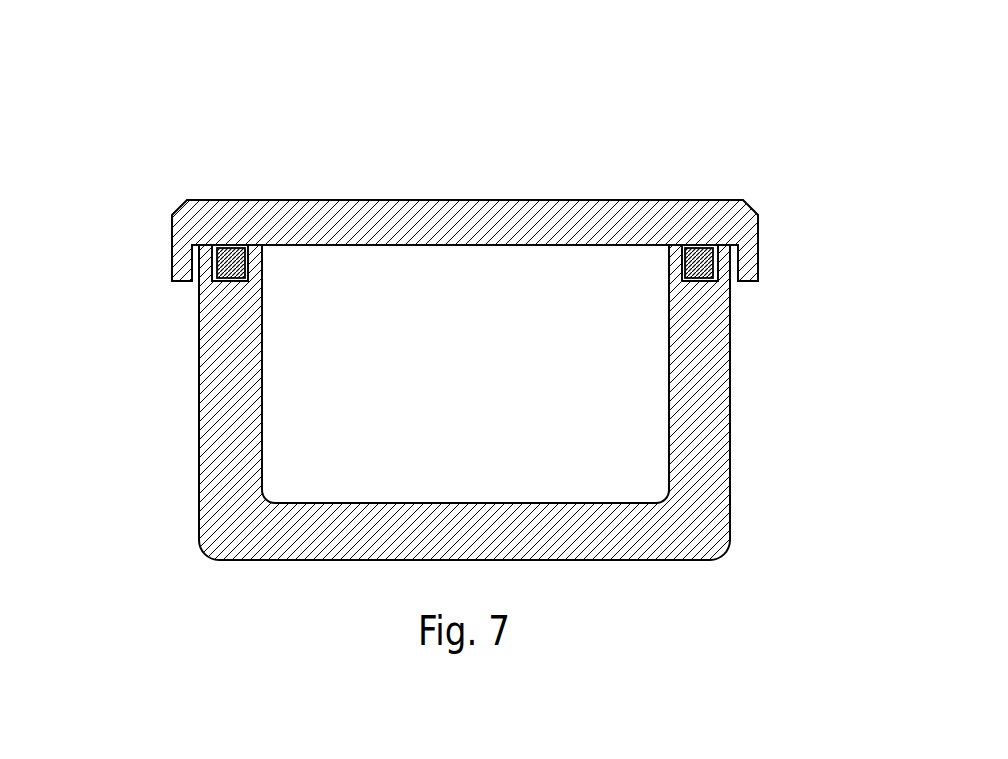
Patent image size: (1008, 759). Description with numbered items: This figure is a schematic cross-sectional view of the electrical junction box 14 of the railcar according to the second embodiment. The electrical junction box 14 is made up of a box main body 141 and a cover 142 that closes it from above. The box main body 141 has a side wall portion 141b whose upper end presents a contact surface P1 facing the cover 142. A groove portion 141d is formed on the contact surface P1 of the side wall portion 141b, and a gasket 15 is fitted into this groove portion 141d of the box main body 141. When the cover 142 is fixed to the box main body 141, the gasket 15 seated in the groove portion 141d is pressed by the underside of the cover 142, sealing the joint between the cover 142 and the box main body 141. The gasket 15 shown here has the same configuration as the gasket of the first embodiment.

The electrical junction box 14 is at (598, 142).
The cover 142 is at (460, 200).
The box main body 141 is at (462, 402).
The side wall portion 141b is at (730, 403).
The groove portion 141d is at (262, 290).
The gasket 15 is at (222, 252).
The contact surface P1 is at (262, 252).